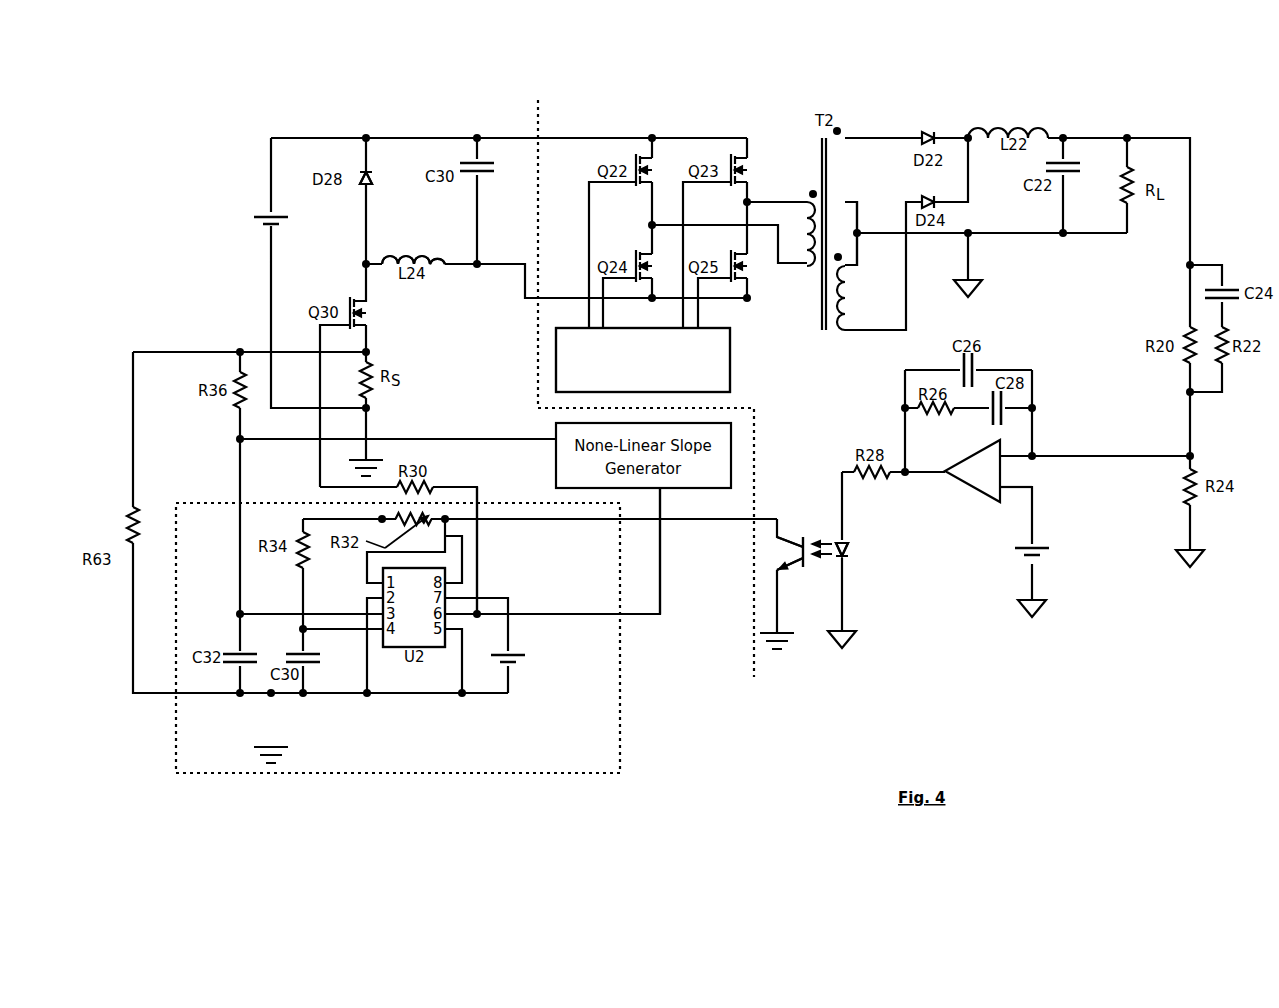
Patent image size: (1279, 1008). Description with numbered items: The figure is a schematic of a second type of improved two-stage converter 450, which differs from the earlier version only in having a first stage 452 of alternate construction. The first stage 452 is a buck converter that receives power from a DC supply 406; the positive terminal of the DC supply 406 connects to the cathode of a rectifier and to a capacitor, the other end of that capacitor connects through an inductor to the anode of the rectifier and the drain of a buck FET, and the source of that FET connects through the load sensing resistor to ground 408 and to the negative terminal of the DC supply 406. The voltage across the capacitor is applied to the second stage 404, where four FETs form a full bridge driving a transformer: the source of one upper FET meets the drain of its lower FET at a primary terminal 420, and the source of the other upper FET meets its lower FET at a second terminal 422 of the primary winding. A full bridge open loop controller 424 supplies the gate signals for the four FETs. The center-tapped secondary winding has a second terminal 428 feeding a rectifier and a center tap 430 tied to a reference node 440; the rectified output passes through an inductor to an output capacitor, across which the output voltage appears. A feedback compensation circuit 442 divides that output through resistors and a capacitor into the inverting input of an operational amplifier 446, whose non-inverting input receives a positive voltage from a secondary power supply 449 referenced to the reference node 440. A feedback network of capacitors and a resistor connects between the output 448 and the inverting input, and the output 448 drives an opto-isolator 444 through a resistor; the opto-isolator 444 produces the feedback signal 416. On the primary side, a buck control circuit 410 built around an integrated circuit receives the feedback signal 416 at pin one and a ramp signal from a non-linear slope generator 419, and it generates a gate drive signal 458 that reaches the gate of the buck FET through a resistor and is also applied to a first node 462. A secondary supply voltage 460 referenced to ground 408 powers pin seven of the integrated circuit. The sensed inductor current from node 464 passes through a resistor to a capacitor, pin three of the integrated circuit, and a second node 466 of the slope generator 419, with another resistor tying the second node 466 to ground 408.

The second stage 404 is at (688, 104).
The DC supply 406 is at (262, 217).
The ground 408 is at (366, 427).
The buck control circuit 410 is at (180, 482).
The feedback signal 416 is at (678, 519).
The non-linear slope generator 419 is at (683, 488).
The primary terminal 420 is at (754, 282).
The second terminal of the primary winding 422 is at (772, 202).
The full bridge open loop controller 424 is at (538, 358).
The second terminal 428 is at (858, 331).
The center tap 430 is at (867, 229).
The reference node 440 is at (969, 264).
The feedback compensation circuit 442 is at (1078, 665).
The opto-isolator 444 is at (816, 518).
The operational amplifier 446 is at (983, 500).
The output 448 is at (927, 473).
The secondary power supply 449 is at (1024, 550).
The two-stage converter 450 is at (678, 786).
The first stage 452 is at (226, 163).
The gate drive signal 458 is at (477, 556).
The secondary supply voltage 460 is at (508, 654).
The first node 462 is at (660, 572).
The node 464 is at (241, 352).
The second node 466 is at (523, 439).